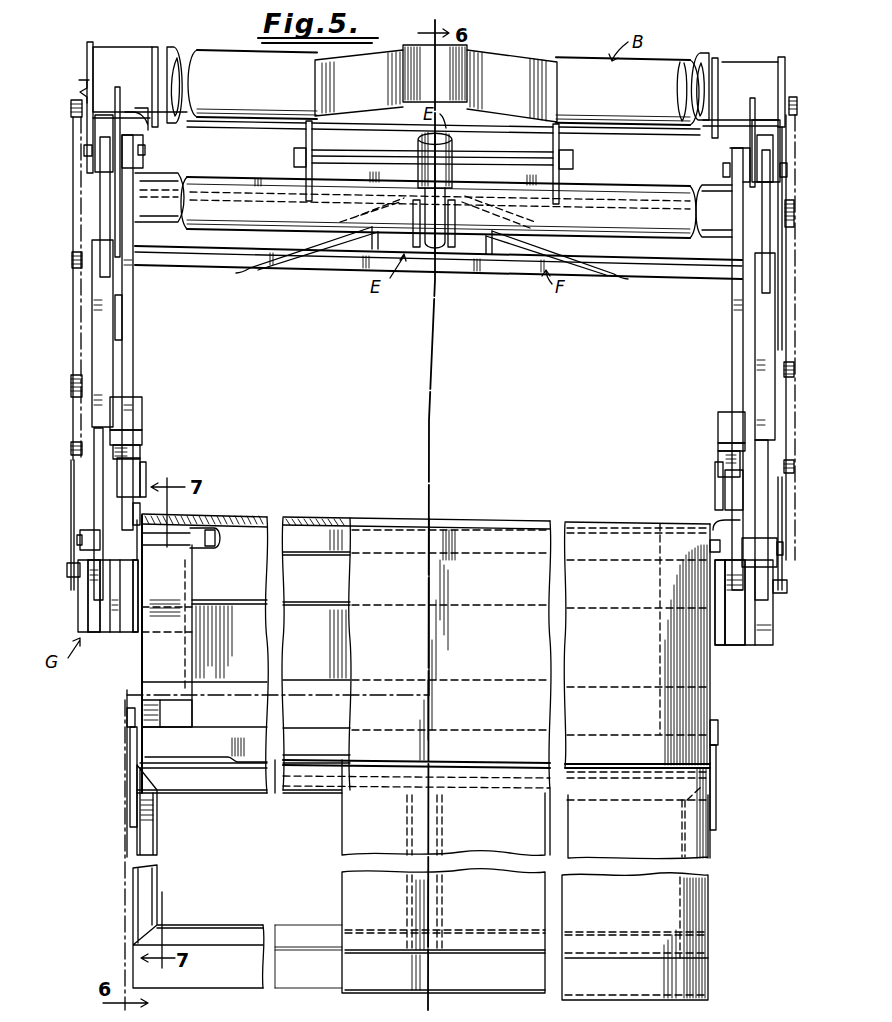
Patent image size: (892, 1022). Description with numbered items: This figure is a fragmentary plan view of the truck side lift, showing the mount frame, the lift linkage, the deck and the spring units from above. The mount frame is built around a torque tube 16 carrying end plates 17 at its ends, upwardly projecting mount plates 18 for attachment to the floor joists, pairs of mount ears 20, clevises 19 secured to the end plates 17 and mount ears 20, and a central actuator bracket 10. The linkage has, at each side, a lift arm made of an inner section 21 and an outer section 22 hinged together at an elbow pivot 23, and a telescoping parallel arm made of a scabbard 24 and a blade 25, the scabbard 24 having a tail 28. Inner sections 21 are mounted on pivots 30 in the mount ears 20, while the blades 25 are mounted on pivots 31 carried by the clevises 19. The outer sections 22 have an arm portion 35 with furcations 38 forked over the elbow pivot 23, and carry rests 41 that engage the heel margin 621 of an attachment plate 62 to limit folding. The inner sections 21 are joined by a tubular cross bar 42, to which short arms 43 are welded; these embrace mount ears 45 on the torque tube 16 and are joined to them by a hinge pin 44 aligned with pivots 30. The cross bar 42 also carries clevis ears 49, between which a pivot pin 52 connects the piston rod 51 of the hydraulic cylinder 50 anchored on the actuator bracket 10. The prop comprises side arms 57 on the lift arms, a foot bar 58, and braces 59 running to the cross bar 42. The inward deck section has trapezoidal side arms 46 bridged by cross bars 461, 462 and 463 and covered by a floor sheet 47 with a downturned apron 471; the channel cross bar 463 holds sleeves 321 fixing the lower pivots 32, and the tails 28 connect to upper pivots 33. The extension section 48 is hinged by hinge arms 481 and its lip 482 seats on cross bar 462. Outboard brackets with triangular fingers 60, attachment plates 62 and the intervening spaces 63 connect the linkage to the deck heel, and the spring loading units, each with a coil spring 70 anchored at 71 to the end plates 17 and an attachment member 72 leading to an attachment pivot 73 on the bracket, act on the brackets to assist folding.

The actuator bracket 10 is at (472, 68).
The torque tube 16 is at (233, 64).
The end plates 17 is at (97, 38).
The mount plates 18 is at (155, 46).
The clevises 19 is at (101, 115).
The mount ears 20 is at (131, 122).
The inner lift arm section 21 is at (131, 360).
The outer lift arm section 22 is at (128, 476).
The elbow pivot 23 is at (142, 428).
The scabbard 24 is at (92, 325).
The blade 25 is at (100, 216).
The scabbard tail 28 is at (94, 497).
The pivots 30 is at (146, 151).
The pivots 31 is at (84, 152).
The lower pivots 32 is at (143, 560).
The upper pivots 33 is at (80, 540).
The arm portion 35 is at (126, 453).
The furcations 38 is at (142, 405).
The rests 41 is at (146, 484).
The cross bar 42 is at (433, 205).
The short arms 43 is at (306, 168).
The hinge pin 44 is at (565, 160).
The mount ears 45 is at (306, 136).
The side arms 46 is at (205, 654).
The floor sheet 47 is at (446, 688).
The outward extension section 48 is at (525, 934).
The clevis ears / hinge pivots 49 is at (440, 250).
The cylinder 50 is at (418, 149).
The piston rod 51 is at (413, 241).
The pivot pin 52 is at (455, 241).
The side arms 57 is at (122, 315).
The foot bar 58 is at (165, 272).
The braces 59 is at (318, 243).
The bracket fingers 60 is at (100, 610).
The attachment plate 62 is at (133, 632).
The space 63 is at (92, 585).
The coil spring 70 is at (72, 450).
The spring anchor 71 is at (78, 84).
The tie rod 72 is at (72, 518).
The attachment pivots 73 is at (67, 573).
The sleeves 321 is at (203, 548).
The cross bar 461 is at (247, 606).
The cross bar 462 is at (247, 727).
The cross bar 463 is at (337, 558).
The apron 471 is at (330, 521).
The hinge arms 481 is at (130, 803).
The marginal lip 482 is at (693, 788).
The heel margin 621 is at (142, 504).